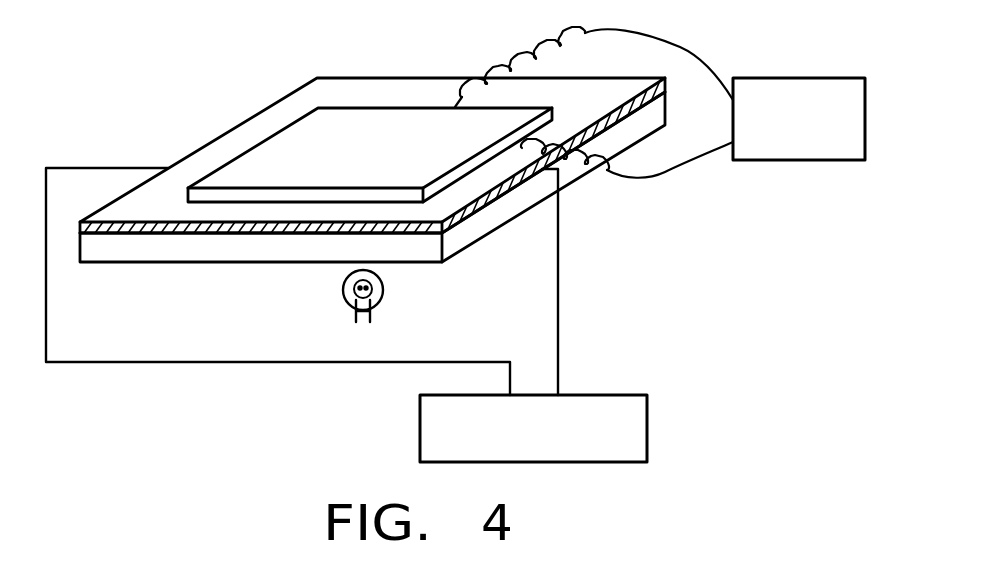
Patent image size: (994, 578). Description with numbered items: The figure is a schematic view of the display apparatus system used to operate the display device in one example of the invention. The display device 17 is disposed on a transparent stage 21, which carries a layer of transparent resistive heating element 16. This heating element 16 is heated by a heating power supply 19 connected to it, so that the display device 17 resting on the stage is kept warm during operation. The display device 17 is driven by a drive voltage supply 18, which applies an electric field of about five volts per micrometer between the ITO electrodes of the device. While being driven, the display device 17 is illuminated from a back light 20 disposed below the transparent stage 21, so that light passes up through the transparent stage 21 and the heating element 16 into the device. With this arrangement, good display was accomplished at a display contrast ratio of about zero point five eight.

The transparent resistive heating element 16 is at (145, 234).
The display device 17 is at (382, 158).
The drive voltage supply 18 is at (812, 76).
The heating power supply 19 is at (647, 430).
The back light 20 is at (383, 300).
The transparent stage 21 is at (278, 250).